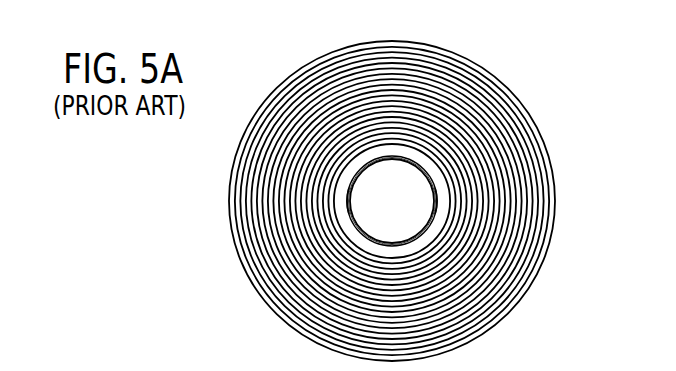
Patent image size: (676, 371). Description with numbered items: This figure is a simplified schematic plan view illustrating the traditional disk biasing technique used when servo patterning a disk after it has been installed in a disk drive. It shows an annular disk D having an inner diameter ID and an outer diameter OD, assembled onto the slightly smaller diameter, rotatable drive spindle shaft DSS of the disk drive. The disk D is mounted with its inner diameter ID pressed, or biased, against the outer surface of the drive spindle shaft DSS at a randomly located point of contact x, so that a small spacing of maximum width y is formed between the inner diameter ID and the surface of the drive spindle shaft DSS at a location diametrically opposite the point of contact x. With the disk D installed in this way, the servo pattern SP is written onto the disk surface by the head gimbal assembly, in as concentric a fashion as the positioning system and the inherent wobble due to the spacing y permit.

The annular disk D is at (509, 77).
The servo pattern SP is at (348, 80).
The inner diameter ID is at (428, 178).
The outer diameter OD is at (546, 202).
The drive spindle shaft DSS is at (405, 200).
The point of contact x is at (341, 180).
The spacing of maximum width y is at (430, 208).